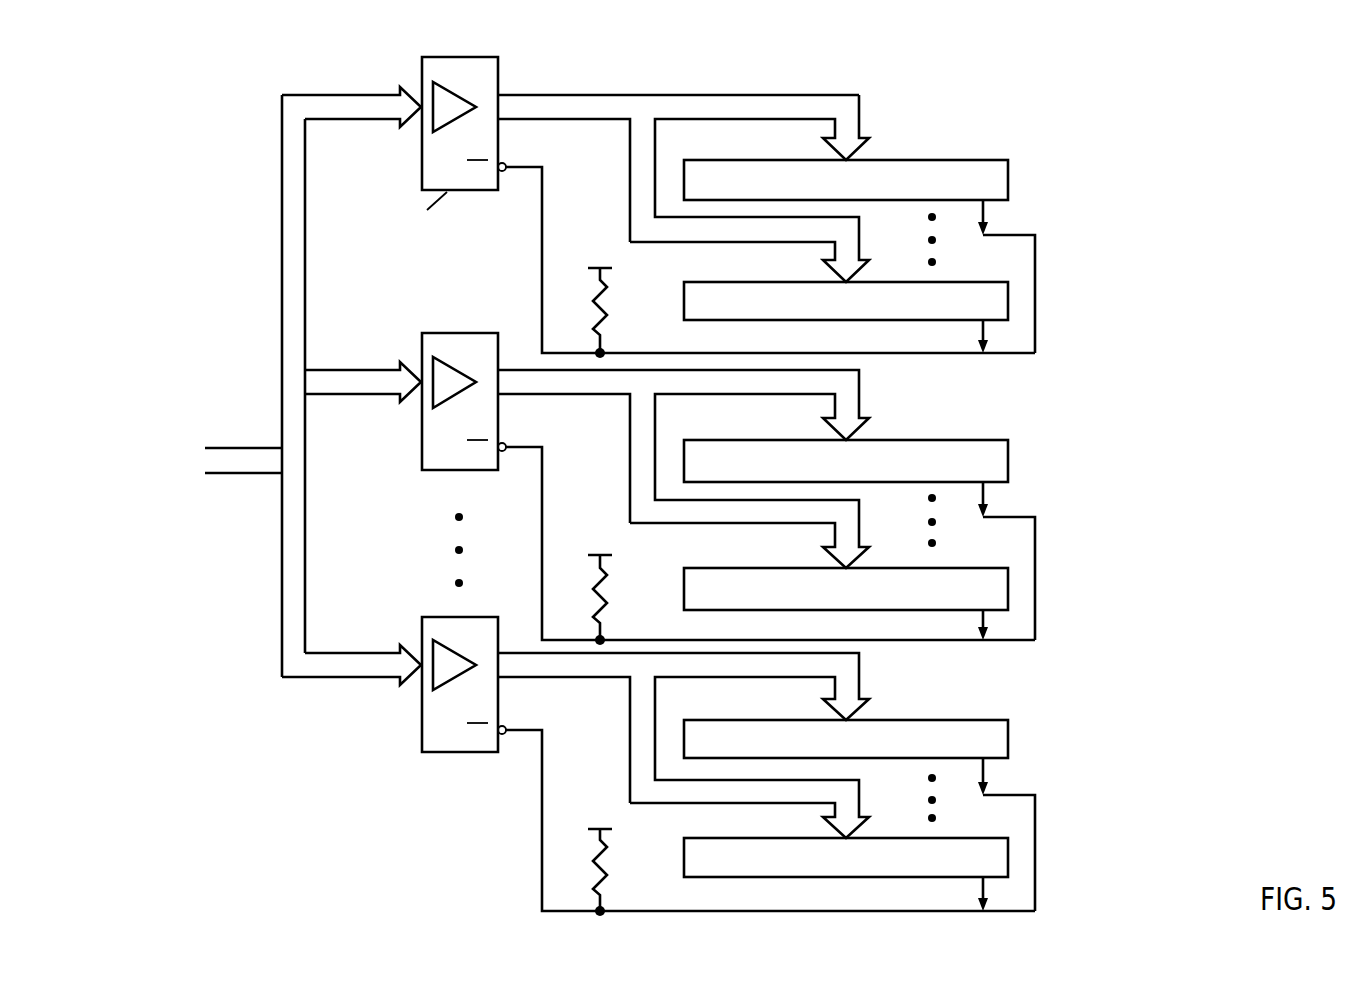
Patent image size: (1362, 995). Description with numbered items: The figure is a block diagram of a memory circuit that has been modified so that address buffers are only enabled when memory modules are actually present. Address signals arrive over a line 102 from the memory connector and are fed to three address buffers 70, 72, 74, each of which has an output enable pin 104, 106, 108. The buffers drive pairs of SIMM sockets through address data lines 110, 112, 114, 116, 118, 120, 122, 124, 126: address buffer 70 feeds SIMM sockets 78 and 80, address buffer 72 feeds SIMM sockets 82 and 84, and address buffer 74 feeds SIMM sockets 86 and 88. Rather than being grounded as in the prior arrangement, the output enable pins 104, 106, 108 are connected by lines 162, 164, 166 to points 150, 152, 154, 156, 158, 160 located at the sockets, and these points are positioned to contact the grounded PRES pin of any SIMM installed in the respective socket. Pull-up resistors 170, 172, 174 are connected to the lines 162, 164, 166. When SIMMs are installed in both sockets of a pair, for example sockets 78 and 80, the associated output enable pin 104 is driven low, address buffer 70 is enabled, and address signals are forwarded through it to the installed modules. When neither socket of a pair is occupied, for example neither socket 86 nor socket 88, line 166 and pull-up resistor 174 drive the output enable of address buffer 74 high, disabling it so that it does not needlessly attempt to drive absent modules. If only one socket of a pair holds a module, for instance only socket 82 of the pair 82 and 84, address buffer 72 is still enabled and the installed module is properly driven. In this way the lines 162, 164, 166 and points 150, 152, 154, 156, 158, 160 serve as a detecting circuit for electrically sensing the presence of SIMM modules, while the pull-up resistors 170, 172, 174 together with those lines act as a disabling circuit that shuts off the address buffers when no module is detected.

The address buffer 70 is at (422, 137).
The address buffer 72 is at (422, 355).
The address buffer 74 is at (422, 637).
The SIMM socket 78 is at (952, 160).
The SIMM socket 80 is at (952, 282).
The SIMM socket 82 is at (952, 440).
The SIMM socket 84 is at (952, 568).
The SIMM socket 86 is at (952, 720).
The SIMM socket 88 is at (952, 838).
The line 102 is at (258, 448).
The output enable pin 104 is at (506, 165).
The output enable pin 106 is at (506, 445).
The output enable pin 108 is at (506, 728).
The address data line 110 is at (580, 93).
The address data line 112 is at (790, 93).
The address data line 114 is at (632, 195).
The address data line 116 is at (620, 396).
The address data line 118 is at (860, 369).
The address data line 120 is at (630, 475).
The address data line 122 is at (620, 680).
The address data line 124 is at (860, 654).
The address data line 126 is at (630, 757).
The point 150 is at (985, 202).
The point 152 is at (985, 322).
The point 154 is at (985, 484).
The point 156 is at (985, 612).
The point 158 is at (985, 760).
The point 160 is at (985, 879).
The line 162 is at (542, 232).
The line 164 is at (540, 507).
The line 166 is at (540, 790).
The pull-up resistor 170 is at (603, 297).
The pull-up resistor 172 is at (603, 583).
The pull-up resistor 174 is at (603, 858).